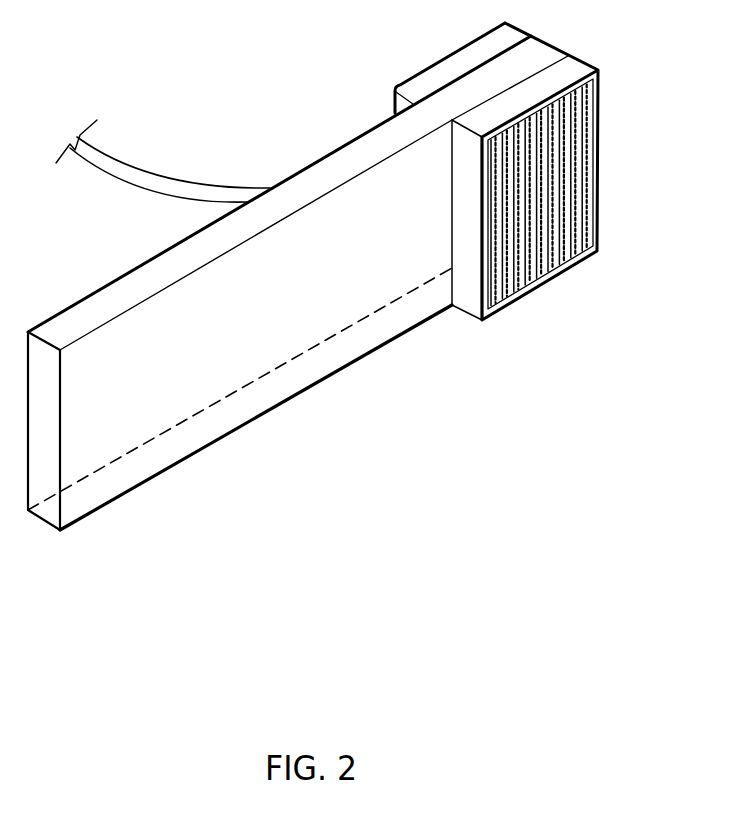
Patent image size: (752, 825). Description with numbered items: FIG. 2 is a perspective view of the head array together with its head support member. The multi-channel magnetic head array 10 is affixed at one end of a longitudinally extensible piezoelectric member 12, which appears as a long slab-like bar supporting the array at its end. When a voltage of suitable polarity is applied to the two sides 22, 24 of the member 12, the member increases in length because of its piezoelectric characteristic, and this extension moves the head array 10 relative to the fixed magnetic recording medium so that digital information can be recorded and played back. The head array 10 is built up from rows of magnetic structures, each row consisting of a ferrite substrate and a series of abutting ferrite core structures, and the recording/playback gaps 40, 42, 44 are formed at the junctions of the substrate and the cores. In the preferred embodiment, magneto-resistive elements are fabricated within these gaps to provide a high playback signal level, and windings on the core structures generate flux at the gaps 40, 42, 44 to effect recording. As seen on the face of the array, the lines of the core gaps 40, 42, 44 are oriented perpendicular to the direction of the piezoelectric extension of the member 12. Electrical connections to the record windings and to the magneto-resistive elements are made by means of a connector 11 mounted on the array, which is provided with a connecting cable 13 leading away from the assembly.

The multi-channel magnetic head array 10 is at (573, 70).
The connector 11 is at (433, 63).
The longitudinally extensible piezoelectric member 12 is at (143, 415).
The connecting cable 13 is at (118, 158).
The side of the piezoelectric member 22 is at (147, 278).
The side of the piezoelectric member 24 is at (311, 358).
The recording/playback gap 40 is at (587, 242).
The recording/playback gap 42 is at (587, 237).
The recording/playback gap 44 is at (587, 225).